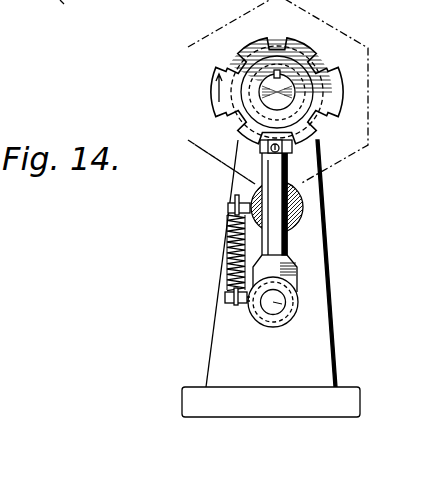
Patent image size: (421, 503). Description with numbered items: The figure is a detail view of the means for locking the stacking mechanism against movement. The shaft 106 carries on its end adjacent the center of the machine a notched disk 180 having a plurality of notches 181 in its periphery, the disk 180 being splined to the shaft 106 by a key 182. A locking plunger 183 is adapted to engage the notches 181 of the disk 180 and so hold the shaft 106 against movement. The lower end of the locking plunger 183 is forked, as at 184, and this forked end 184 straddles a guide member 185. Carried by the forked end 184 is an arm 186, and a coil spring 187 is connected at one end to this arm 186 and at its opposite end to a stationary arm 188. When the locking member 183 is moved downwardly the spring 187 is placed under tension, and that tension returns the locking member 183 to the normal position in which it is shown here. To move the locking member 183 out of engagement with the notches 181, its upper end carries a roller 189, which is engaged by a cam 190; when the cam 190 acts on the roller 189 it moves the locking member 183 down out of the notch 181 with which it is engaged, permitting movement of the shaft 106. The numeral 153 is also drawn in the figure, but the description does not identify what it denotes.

The element of adjacent figure 153 is at (113, 0).
The key 182 is at (277, 70).
The notched disk 180 is at (305, 43).
The shaft 106 is at (287, 92).
The notches 181 is at (337, 115).
The cam 190 is at (272, 192).
The roller 189 is at (279, 193).
The stationary arm 188 is at (233, 207).
The coil spring 187 is at (228, 283).
The arm 186 is at (240, 305).
The locking plunger 183 is at (278, 240).
The forked end 184 is at (297, 268).
The guide member 185 is at (285, 304).